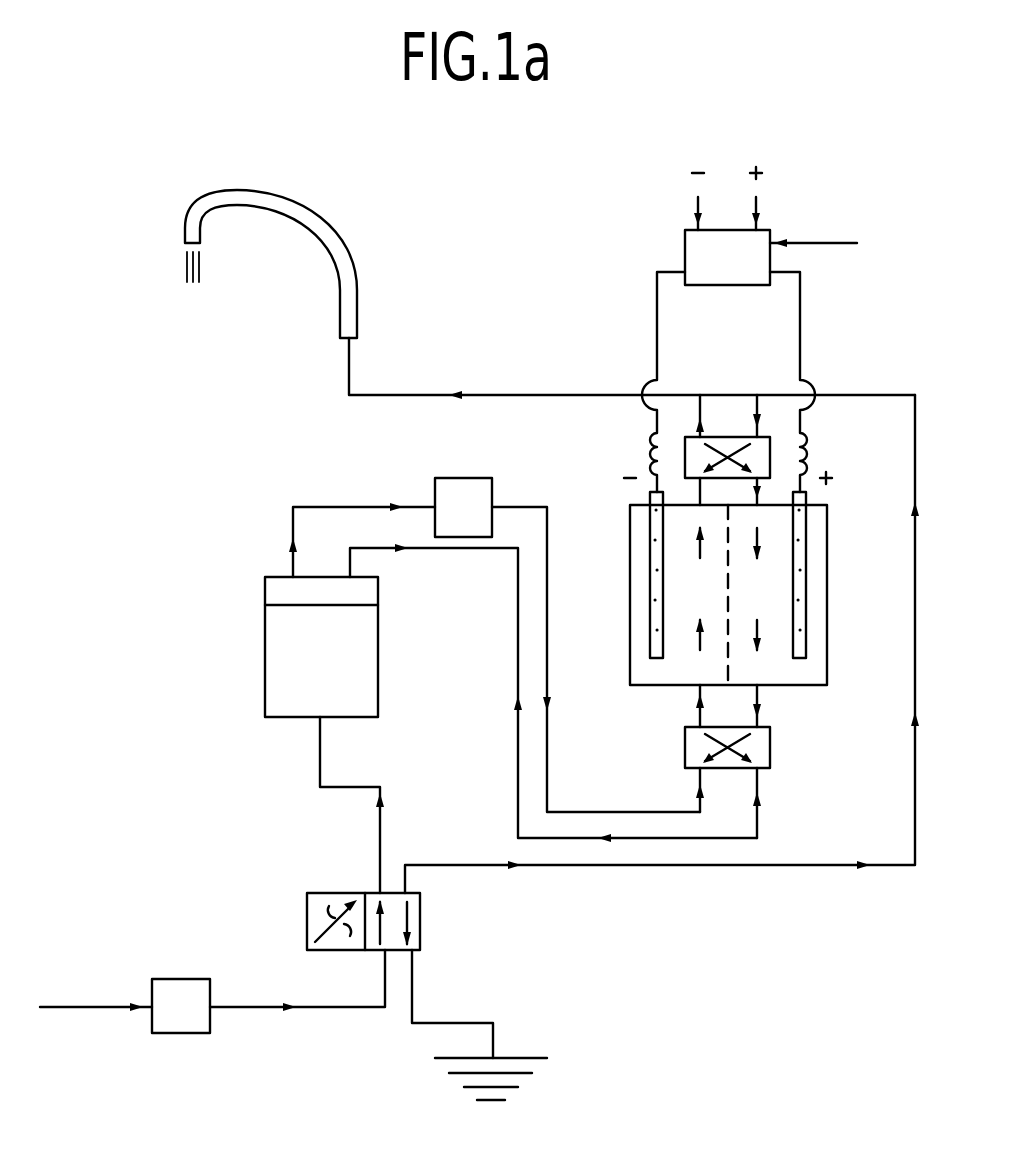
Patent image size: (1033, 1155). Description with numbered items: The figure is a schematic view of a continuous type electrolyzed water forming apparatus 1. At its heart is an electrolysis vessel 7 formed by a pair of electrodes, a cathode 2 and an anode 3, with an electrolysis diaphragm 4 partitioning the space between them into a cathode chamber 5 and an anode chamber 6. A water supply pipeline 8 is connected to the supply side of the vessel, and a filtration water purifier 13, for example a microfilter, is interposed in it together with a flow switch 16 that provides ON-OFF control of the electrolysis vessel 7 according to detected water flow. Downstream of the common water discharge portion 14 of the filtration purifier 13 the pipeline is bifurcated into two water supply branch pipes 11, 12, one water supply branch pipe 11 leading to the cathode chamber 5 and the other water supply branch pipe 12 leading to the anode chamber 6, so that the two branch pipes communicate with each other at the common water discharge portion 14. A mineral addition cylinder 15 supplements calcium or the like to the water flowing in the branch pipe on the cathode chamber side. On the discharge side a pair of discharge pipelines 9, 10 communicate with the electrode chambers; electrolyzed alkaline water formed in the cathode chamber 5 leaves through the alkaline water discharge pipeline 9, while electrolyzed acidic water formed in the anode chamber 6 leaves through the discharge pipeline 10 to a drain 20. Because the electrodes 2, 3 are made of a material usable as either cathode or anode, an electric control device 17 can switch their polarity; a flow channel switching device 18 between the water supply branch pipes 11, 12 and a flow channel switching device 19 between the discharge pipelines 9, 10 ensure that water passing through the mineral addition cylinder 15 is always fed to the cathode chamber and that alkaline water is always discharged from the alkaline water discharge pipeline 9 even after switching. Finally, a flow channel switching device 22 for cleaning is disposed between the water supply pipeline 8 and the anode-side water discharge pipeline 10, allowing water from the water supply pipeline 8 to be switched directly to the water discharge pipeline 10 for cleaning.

The electrolyzed water forming apparatus 1 is at (541, 246).
The cathode 2 is at (650, 615).
The anode 3 is at (807, 612).
The electrolysis diaphragm 4 is at (735, 655).
The cathode chamber 5 is at (689, 605).
The anode chamber 6 is at (746, 605).
The electrolysis vessel 7 is at (834, 511).
The water supply pipeline 8 is at (320, 787).
The alkaline water discharge pipeline 9 is at (518, 395).
The water discharge pipeline 10 is at (872, 395).
The water supply branch pipe 11 is at (293, 518).
The water supply branch pipe 12 is at (432, 548).
The filtration water purifier 13 is at (265, 683).
The common water discharge portion 14 is at (270, 594).
The mineral addition cylinder 15 is at (433, 490).
The flow switch 16 is at (170, 1022).
The electric control device 17 is at (688, 245).
The flow channel switching device 18 is at (688, 752).
The flow channel switching device 19 is at (728, 437).
The drain 20 is at (530, 1060).
The flow channel switching device for cleaning 22 is at (307, 912).